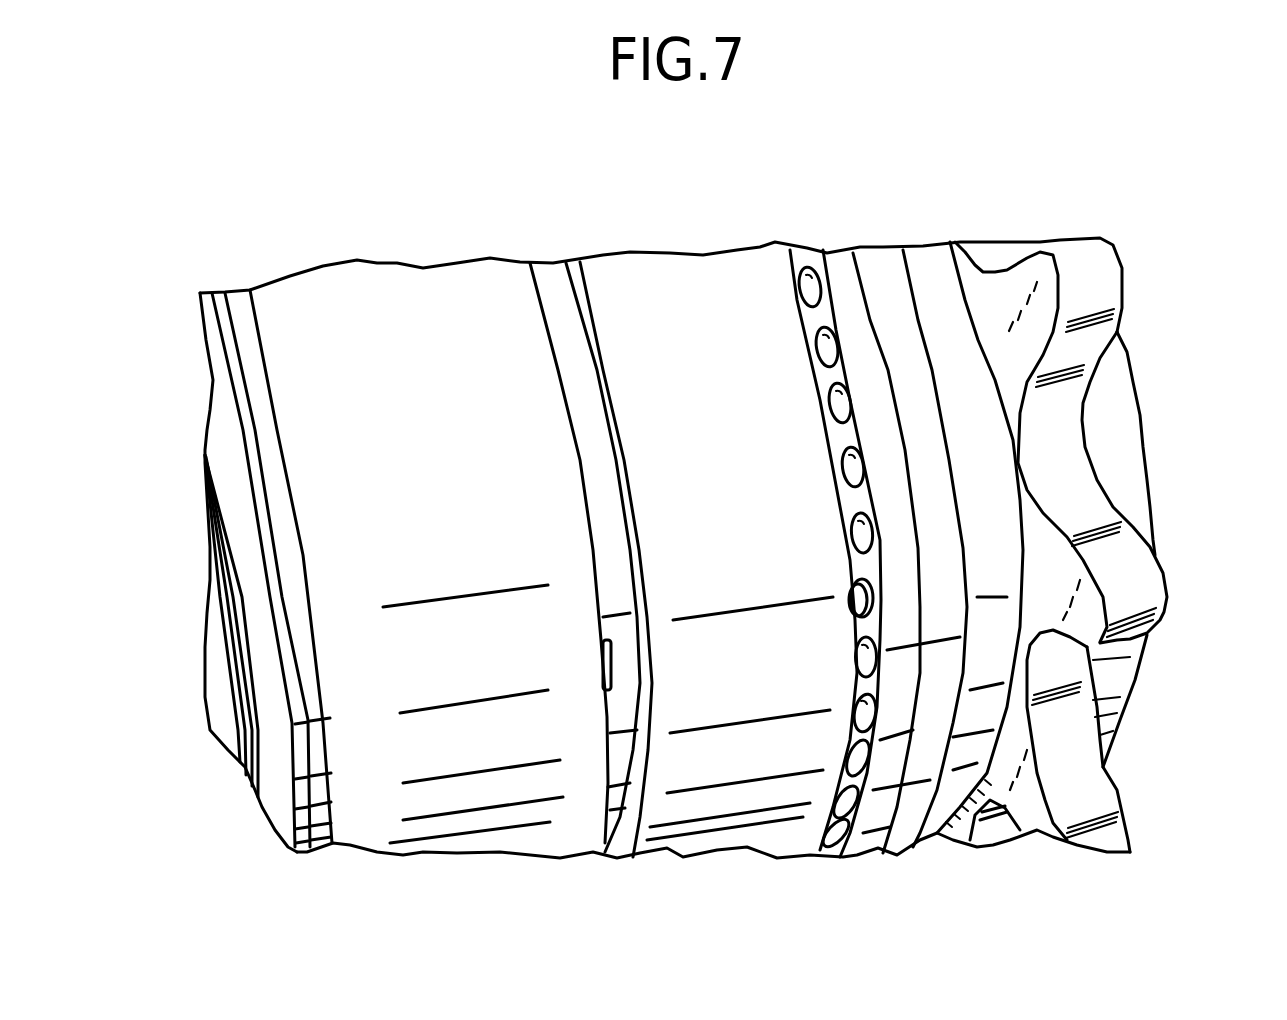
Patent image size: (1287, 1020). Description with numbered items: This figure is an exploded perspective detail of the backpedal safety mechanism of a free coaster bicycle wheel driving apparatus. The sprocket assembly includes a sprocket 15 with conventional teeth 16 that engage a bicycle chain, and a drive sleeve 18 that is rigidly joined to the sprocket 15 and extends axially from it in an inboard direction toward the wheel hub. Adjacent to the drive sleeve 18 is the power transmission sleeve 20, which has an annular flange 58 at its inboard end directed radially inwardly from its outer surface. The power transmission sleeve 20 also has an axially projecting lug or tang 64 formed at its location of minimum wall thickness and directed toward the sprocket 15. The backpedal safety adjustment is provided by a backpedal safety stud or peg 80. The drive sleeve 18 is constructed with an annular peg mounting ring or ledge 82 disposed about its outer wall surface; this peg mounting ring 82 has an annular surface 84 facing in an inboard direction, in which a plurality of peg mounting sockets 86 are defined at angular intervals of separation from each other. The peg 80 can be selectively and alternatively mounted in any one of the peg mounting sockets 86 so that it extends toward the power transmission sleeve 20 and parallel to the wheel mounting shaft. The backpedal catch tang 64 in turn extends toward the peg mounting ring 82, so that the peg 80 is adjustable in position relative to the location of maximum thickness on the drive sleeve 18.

The sprocket 15 is at (1010, 286).
The teeth 16 is at (1083, 263).
The drive sleeve 18 is at (707, 799).
The power transmission sleeve 20 is at (405, 308).
The annular flange 58 is at (278, 803).
The tang 64 is at (612, 665).
The backpedal safety peg 80 is at (850, 592).
The peg mounting ring 82 is at (880, 272).
The annular surface 84 is at (797, 257).
The peg mounting sockets 86 is at (823, 345).